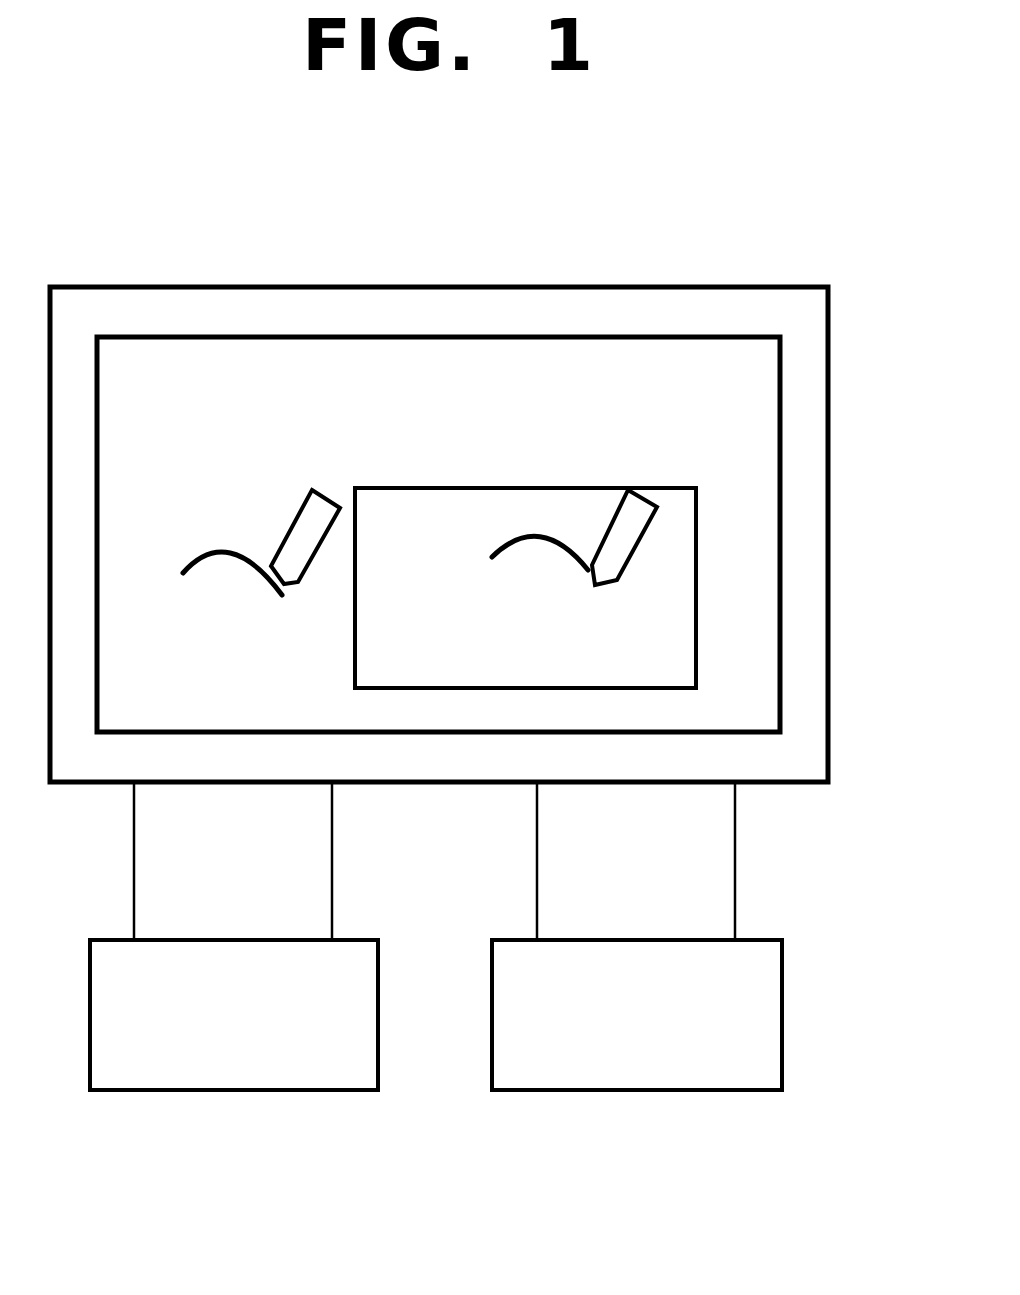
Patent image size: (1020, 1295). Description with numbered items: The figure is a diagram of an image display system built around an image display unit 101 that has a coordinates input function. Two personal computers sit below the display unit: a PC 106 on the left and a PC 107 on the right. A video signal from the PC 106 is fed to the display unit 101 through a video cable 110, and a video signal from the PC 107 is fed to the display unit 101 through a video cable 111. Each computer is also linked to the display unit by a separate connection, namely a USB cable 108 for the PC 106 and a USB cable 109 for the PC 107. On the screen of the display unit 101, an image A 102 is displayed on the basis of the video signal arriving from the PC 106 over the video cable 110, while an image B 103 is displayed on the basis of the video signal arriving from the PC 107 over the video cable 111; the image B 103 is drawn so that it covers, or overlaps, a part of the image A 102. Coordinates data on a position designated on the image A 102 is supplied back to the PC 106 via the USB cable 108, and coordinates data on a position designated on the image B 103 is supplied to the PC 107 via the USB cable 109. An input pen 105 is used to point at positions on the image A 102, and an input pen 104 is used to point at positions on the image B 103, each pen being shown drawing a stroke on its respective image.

The image display unit 101 is at (605, 298).
The image A 102 is at (360, 363).
The image B 103 is at (483, 506).
The input pen 104 is at (637, 510).
The input pen 105 is at (302, 537).
The PC 106 is at (233, 1090).
The PC 107 is at (638, 1090).
The USB cable 108 is at (332, 862).
The USB cable 109 is at (735, 862).
The video cable 110 is at (134, 862).
The video cable 111 is at (537, 862).